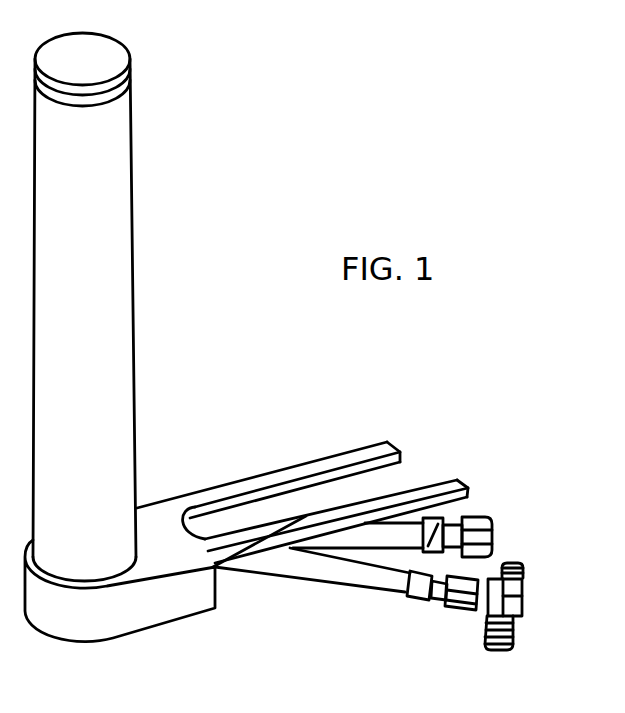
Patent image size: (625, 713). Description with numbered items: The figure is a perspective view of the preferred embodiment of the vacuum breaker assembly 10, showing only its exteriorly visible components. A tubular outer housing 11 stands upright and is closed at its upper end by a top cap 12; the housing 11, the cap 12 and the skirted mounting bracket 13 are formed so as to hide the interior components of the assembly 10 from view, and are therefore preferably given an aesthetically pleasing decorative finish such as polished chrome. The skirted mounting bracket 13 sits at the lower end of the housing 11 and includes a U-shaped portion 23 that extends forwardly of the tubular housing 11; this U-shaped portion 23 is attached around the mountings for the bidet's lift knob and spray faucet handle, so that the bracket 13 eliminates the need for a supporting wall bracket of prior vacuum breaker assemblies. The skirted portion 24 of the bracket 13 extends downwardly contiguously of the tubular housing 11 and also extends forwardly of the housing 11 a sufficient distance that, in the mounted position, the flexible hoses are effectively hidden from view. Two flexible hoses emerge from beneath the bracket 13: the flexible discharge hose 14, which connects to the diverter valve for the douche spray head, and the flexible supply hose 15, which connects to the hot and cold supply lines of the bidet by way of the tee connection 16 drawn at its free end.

The vacuum breaker assembly 10 is at (181, 251).
The tubular outer housing 11 is at (115, 176).
The top cap 12 is at (97, 47).
The skirted mounting bracket 13 is at (302, 494).
The flexible discharge hose 14 is at (442, 521).
The flexible supply hose 15 is at (362, 575).
The tee connection 16 is at (517, 603).
The U-shaped portion 23 is at (238, 492).
The skirted portion 24 is at (137, 614).